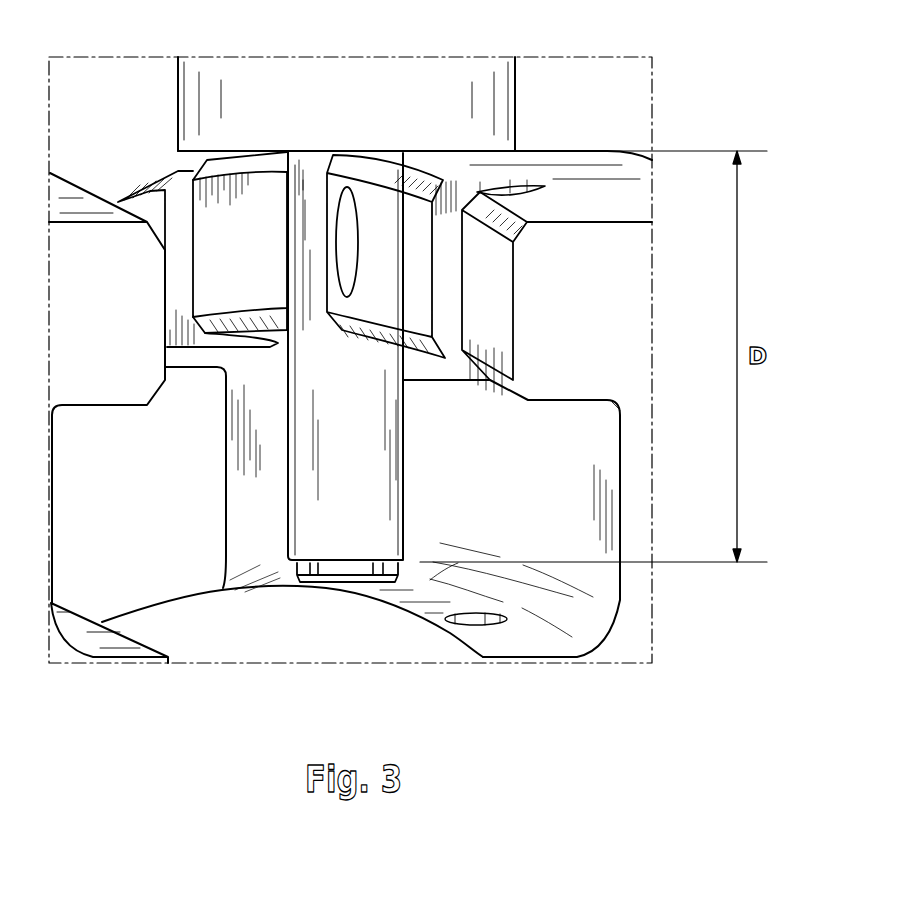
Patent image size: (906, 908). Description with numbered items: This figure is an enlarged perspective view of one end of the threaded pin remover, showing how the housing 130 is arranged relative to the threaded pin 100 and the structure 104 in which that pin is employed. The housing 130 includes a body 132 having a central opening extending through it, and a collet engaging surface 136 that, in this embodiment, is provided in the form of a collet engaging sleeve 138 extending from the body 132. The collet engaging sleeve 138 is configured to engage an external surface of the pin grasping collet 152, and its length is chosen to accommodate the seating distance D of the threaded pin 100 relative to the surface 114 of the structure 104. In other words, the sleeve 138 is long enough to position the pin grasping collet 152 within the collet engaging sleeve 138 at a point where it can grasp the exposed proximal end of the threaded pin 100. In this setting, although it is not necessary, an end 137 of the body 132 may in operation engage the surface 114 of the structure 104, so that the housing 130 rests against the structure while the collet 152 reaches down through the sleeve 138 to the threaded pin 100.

The housing 130 is at (177, 83).
The body 132 is at (500, 103).
The end 137 is at (184, 157).
The surface 114 is at (582, 187).
The collet engaging sleeve 138 is at (325, 418).
The collet engaging surface 136 is at (270, 573).
The pin grasping collet 152 is at (300, 573).
The threaded pin 100 is at (328, 580).
The structure 104 is at (370, 633).